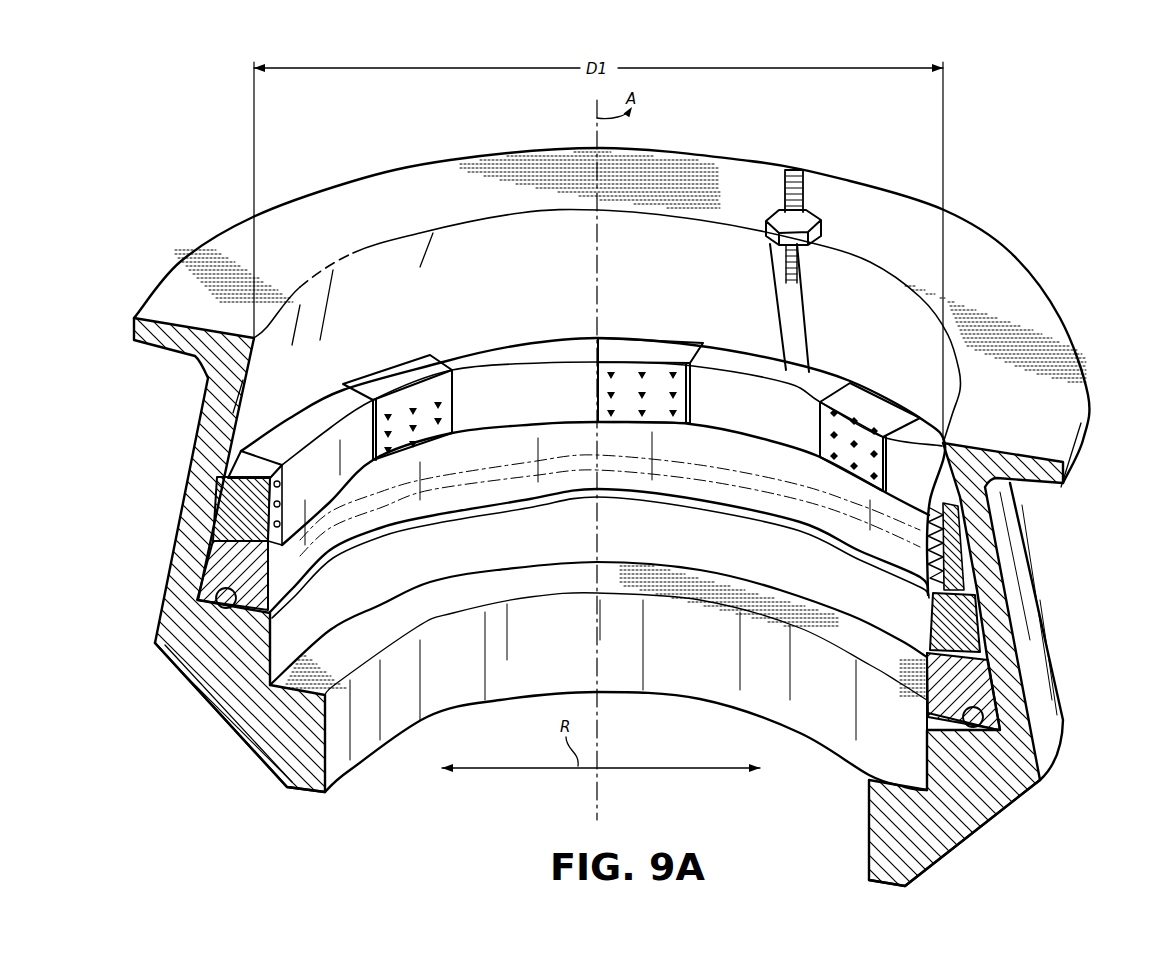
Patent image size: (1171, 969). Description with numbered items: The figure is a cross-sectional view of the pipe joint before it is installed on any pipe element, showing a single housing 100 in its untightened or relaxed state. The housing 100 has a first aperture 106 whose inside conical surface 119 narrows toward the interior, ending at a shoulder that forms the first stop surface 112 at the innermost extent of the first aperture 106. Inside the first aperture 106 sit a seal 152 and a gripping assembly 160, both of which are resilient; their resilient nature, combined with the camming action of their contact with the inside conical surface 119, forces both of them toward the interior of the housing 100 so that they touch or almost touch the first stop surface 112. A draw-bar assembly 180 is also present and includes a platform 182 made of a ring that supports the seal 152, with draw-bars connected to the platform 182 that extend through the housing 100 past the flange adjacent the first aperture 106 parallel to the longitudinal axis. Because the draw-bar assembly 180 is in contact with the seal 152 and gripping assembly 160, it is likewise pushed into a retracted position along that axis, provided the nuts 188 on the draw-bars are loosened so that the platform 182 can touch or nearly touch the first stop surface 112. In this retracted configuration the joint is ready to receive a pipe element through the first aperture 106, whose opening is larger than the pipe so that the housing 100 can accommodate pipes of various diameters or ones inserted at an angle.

The housing 100 is at (992, 236).
The first aperture 106 is at (620, 187).
The first stop surface 112 is at (352, 545).
The inside conical surface 119 is at (391, 306).
The seal 152 is at (640, 445).
The gripping assembly 160 is at (535, 335).
The draw-bar assembly 180 is at (810, 358).
The platform 182 is at (985, 800).
The nuts 188 is at (817, 223).